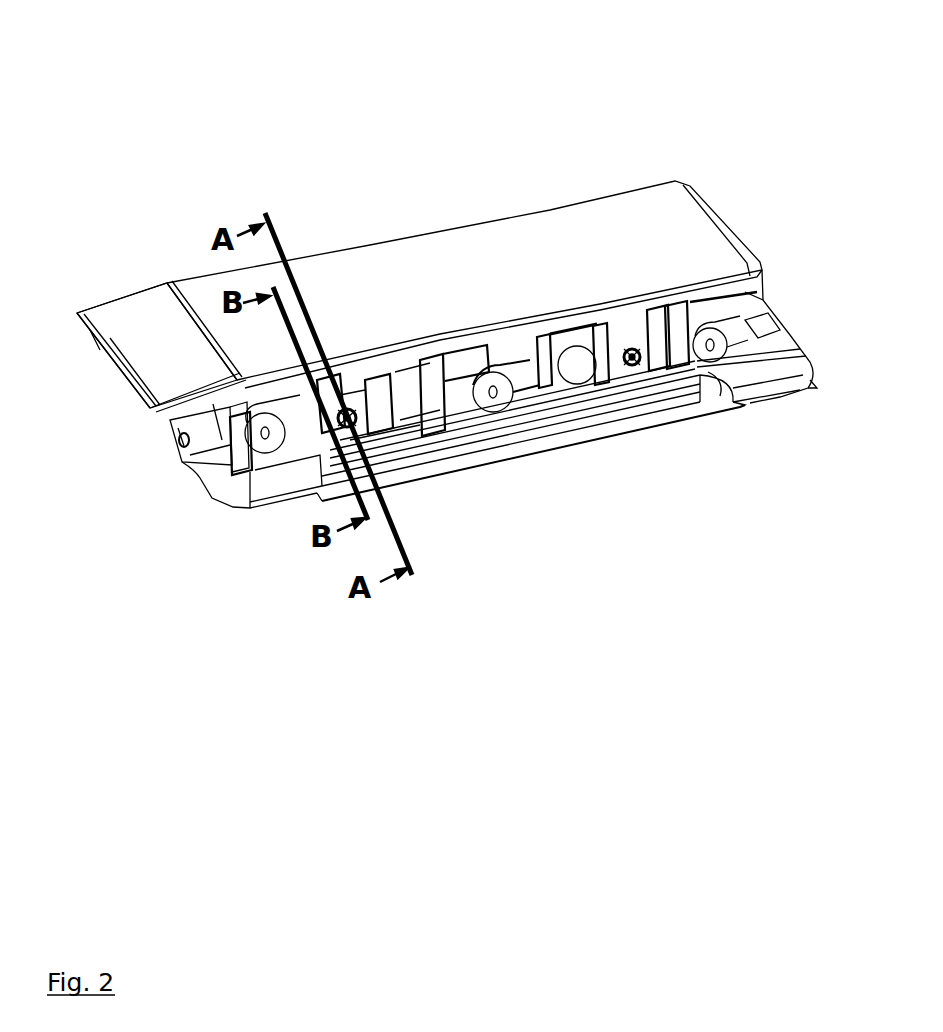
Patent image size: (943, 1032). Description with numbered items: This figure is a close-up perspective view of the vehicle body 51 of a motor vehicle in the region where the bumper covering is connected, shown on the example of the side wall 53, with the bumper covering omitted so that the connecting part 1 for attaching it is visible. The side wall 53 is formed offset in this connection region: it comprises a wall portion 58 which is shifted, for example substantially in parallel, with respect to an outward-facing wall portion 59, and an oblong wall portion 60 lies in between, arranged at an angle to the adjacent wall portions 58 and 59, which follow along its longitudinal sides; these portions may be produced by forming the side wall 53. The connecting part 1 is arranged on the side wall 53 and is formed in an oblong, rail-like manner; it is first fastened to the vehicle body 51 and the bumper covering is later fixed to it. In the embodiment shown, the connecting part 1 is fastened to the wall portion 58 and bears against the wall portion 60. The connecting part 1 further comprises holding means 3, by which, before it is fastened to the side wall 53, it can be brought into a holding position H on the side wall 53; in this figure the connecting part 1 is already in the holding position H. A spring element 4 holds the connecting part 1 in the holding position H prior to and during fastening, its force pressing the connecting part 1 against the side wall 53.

The connecting part 1 is at (443, 423).
The holding means 3 is at (367, 427).
The spring element 4 is at (358, 400).
The vehicle body 51 is at (618, 230).
The side wall 53 is at (666, 168).
The wall portion 58 is at (227, 487).
The wall portion 59 is at (142, 327).
The wall portion 60 is at (710, 294).
The holding position H is at (168, 450).